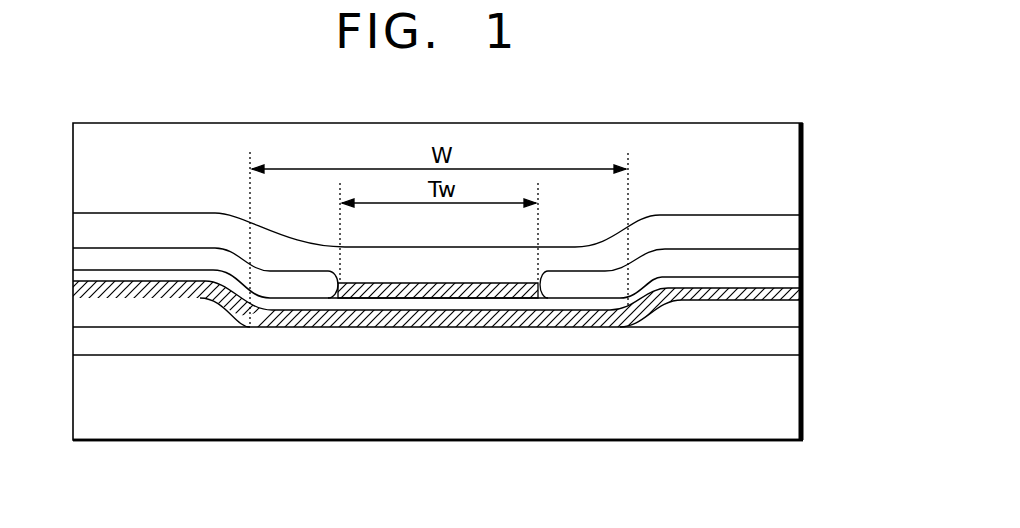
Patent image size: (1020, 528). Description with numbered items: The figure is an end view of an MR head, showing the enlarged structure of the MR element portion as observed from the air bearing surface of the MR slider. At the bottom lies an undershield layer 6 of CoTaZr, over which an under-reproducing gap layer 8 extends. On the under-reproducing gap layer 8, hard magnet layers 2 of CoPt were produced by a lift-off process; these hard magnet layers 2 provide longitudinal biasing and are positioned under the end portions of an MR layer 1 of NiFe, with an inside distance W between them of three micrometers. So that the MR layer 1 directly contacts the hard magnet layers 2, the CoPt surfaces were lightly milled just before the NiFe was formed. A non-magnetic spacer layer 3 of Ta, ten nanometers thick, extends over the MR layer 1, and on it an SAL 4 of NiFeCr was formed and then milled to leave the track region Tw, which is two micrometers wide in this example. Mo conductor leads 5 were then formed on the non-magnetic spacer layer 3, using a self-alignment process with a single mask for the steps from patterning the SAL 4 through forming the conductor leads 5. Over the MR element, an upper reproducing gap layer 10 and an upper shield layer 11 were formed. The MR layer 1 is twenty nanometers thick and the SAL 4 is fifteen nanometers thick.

The MR layer 1 is at (314, 320).
The hard magnet layer 2 is at (803, 313).
The non-magnetic spacer layer 3 is at (433, 305).
The SAL 4 is at (514, 289).
The conductor leads 5 is at (742, 272).
The undershield layer 6 is at (803, 405).
The under-reproducing gap layer 8 is at (745, 356).
The upper reproducing gap layer 10 is at (743, 242).
The upper shield layer 11 is at (745, 190).